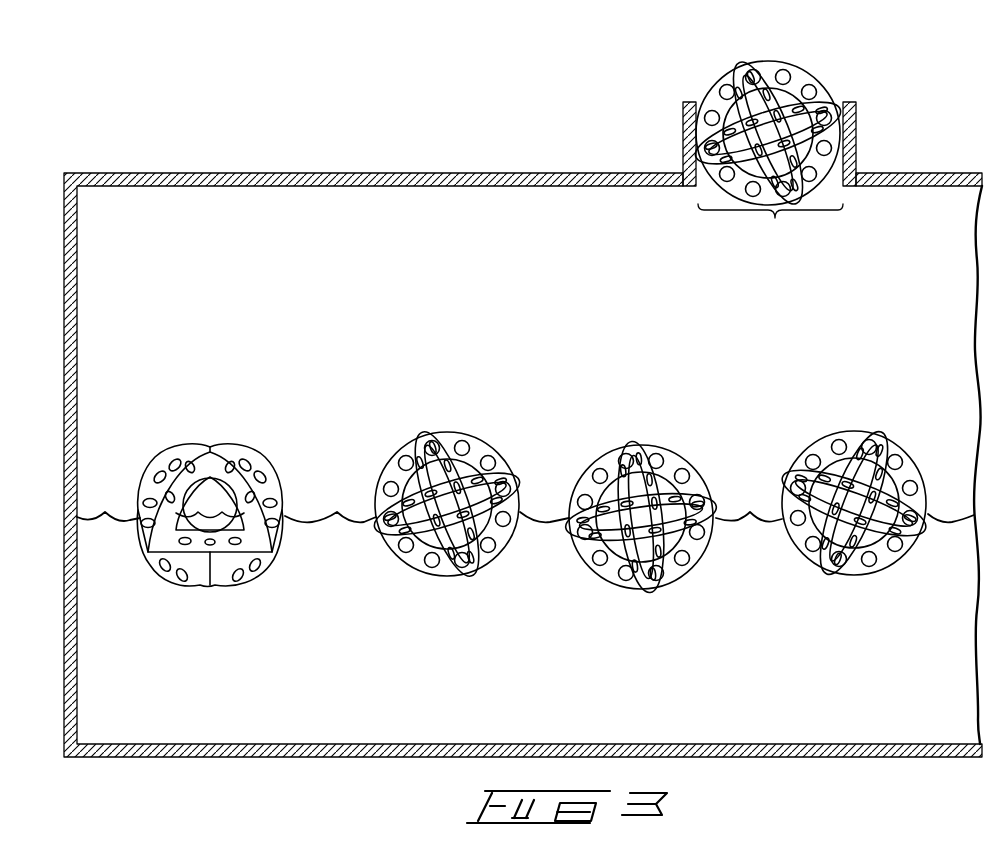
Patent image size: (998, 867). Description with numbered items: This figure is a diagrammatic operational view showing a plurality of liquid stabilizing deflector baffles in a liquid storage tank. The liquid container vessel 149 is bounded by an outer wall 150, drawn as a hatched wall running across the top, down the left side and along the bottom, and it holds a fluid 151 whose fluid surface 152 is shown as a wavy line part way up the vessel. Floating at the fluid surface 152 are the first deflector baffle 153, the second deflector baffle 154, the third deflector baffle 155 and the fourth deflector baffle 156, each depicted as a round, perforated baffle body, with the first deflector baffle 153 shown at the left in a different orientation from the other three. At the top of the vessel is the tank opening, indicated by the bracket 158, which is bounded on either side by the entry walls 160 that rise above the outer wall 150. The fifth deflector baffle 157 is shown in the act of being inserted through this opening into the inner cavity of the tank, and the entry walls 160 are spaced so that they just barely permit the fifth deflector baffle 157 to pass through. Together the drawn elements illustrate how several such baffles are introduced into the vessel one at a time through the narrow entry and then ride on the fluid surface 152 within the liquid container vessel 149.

The liquid container vessel 149 is at (523, 451).
The outer wall 150 is at (337, 173).
The fluid 151 is at (525, 548).
The fluid surface 152 is at (322, 506).
The first deflector baffle 153 is at (214, 416).
The second deflector baffle 154 is at (449, 416).
The third deflector baffle 155 is at (644, 416).
The fourth deflector baffle 156 is at (856, 416).
The fifth deflector baffle 157 is at (806, 48).
The opening 158 is at (770, 230).
The entry walls 160 is at (683, 118).